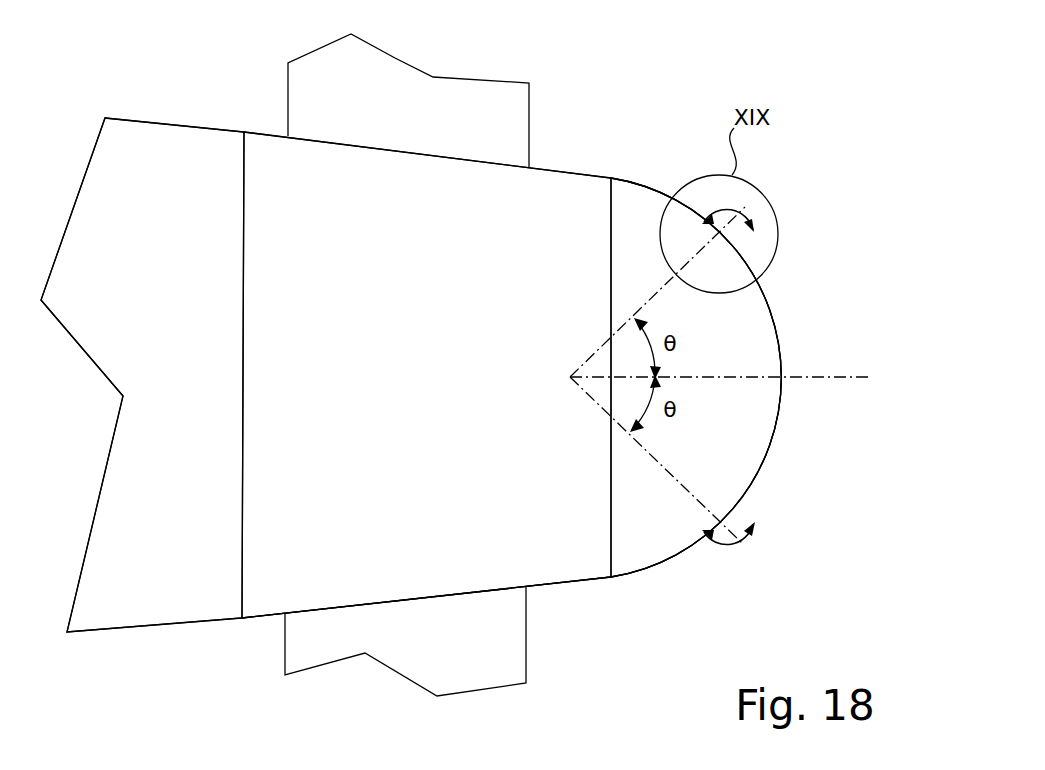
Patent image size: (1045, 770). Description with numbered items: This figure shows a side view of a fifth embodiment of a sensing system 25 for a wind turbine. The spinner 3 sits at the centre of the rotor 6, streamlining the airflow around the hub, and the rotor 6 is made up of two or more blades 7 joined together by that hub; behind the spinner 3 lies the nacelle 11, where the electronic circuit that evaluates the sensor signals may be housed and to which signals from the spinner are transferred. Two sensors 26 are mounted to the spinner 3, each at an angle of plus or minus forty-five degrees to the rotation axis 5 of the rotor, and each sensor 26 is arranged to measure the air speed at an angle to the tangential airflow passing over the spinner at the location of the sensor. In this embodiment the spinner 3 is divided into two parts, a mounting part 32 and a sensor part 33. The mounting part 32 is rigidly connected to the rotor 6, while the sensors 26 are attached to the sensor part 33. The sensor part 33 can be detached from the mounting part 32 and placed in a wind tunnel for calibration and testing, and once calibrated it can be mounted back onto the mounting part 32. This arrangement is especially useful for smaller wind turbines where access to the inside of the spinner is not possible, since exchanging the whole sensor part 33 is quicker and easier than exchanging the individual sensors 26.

The spinner 3 is at (611, 597).
The rotation axis 5 is at (822, 383).
The rotor 6 is at (592, 694).
The blades 7 is at (300, 655).
The nacelle 11 is at (157, 280).
The sensing system 25 is at (640, 58).
The sensors 26 is at (760, 215).
The mounting part 32 is at (425, 542).
The sensor part 33 is at (670, 523).